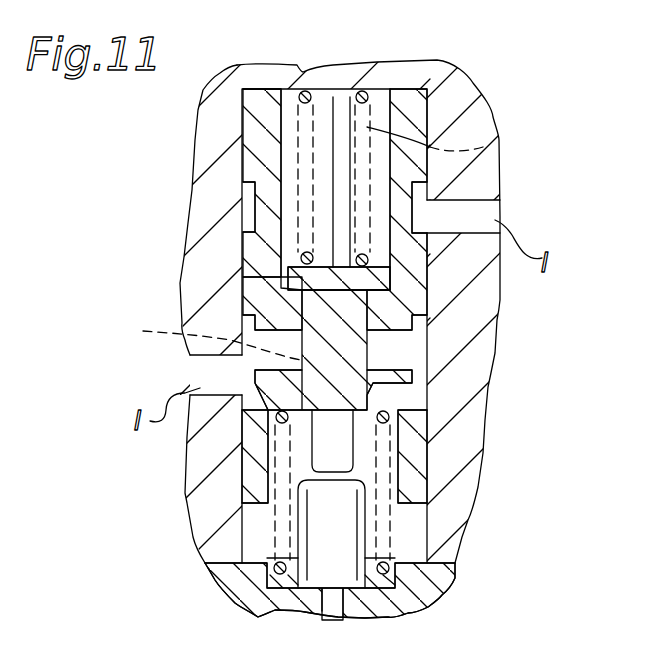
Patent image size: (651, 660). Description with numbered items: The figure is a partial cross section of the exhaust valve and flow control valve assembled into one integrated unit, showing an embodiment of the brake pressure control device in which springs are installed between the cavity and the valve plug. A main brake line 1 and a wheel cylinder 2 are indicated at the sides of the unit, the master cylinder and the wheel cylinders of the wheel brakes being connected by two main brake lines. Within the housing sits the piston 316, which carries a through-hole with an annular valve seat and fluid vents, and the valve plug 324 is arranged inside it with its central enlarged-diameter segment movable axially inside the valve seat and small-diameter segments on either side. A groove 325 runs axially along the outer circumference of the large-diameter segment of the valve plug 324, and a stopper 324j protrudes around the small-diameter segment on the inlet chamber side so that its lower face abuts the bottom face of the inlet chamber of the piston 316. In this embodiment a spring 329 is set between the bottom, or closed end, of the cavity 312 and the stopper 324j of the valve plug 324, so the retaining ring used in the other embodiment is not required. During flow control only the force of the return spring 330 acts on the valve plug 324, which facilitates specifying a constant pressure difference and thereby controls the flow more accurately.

The cavity 312 is at (342, 90).
The piston 316 is at (407, 110).
The spring 329 is at (483, 147).
The main brake line 1 is at (507, 217).
The wheel cylinder 2 is at (180, 373).
The valve plug 324 is at (425, 360).
The stopper 324j is at (288, 278).
The groove 325 is at (197, 342).
The return spring 330 is at (400, 536).